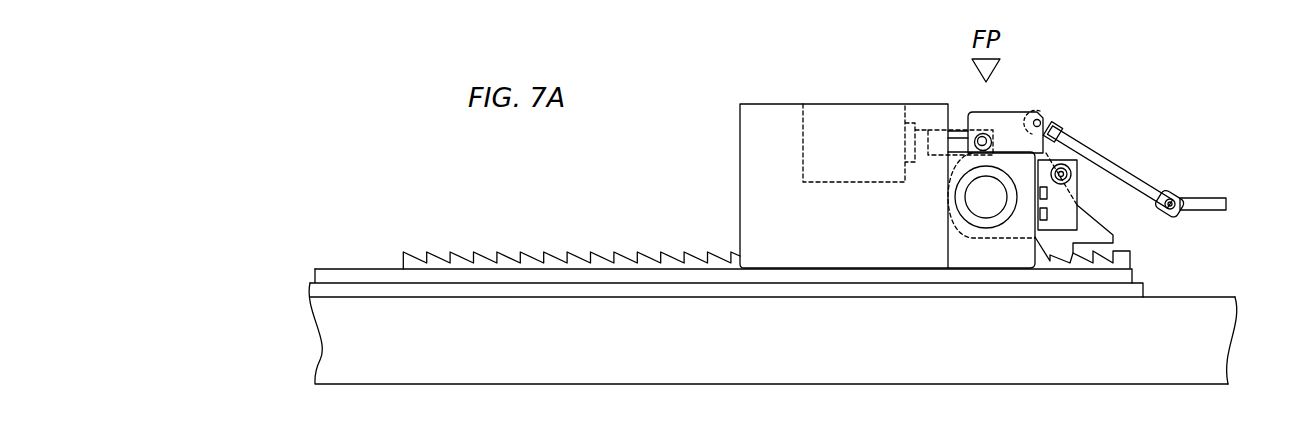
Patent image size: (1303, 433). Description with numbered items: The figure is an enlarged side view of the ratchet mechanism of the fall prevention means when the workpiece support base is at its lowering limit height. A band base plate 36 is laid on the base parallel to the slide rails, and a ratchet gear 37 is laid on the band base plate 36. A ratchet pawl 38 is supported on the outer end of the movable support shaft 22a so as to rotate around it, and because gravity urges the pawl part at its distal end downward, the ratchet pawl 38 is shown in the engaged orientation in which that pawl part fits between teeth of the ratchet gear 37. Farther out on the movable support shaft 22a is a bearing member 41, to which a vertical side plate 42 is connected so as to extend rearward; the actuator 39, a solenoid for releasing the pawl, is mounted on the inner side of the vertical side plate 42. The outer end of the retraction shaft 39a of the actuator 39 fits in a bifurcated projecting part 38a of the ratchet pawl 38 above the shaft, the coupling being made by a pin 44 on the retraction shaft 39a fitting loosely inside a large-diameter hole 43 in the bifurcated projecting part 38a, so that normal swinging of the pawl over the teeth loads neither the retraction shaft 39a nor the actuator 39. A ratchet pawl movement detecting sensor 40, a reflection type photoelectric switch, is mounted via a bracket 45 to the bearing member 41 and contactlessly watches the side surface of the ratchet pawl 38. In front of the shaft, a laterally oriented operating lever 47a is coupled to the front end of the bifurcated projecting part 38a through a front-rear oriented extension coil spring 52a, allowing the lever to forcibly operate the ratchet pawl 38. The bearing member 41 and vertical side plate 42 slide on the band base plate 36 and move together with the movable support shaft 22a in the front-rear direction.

The band base plate 36 is at (385, 278).
The ratchet gear 37 is at (573, 263).
The vertical side plate 42 is at (845, 237).
The movable support shaft 22a is at (982, 205).
The bearing member 41 is at (993, 253).
The bracket 45 is at (1058, 223).
The pin 44 is at (968, 197).
The actuator 39 is at (840, 143).
The retraction shaft 39a is at (957, 145).
The large-diameter hole 43 is at (987, 136).
The bifurcated projecting part 38a is at (1012, 118).
The ratchet pawl movement detecting sensor 40 is at (1062, 166).
The extension coil spring 52a is at (1107, 163).
The ratchet pawl 38 is at (1097, 232).
The operating lever 47a is at (1208, 203).